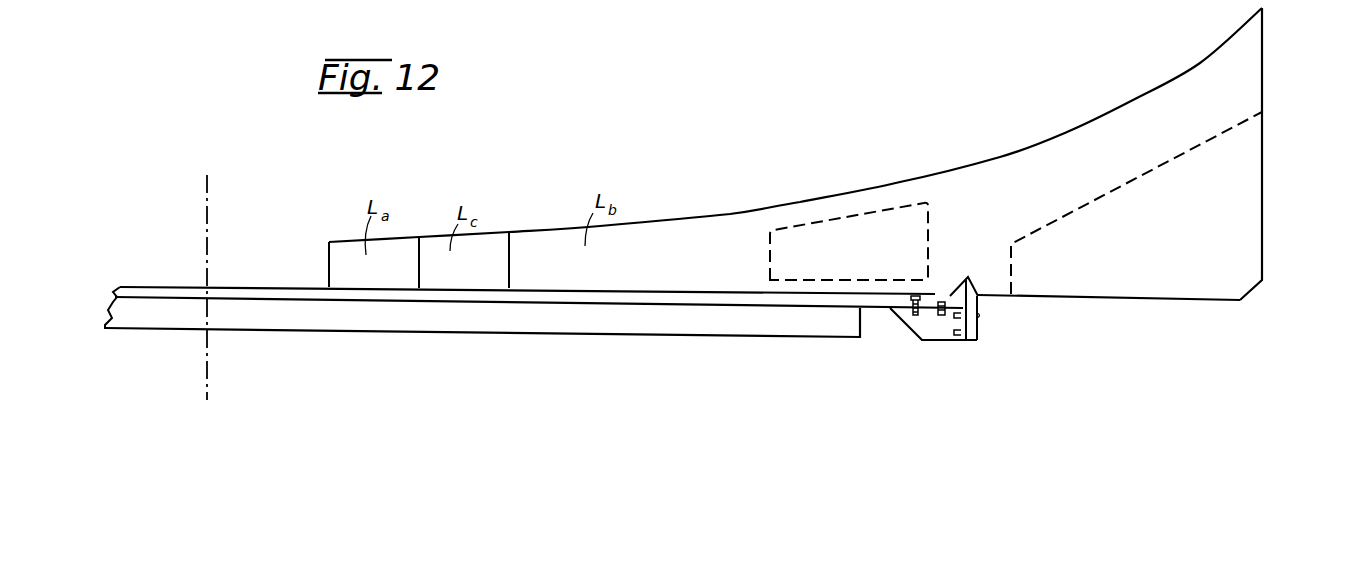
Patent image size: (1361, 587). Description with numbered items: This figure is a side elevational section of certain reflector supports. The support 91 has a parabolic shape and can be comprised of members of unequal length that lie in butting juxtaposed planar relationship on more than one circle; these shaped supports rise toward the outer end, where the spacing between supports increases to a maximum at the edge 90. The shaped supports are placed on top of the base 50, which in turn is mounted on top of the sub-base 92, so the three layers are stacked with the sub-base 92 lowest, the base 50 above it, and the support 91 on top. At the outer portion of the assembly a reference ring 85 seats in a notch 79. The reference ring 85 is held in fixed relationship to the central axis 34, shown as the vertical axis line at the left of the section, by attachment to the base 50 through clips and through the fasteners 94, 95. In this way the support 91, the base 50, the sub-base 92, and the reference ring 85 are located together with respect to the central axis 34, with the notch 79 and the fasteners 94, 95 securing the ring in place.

The central axis 34 is at (206, 398).
The base 50 is at (622, 300).
The notch 79 is at (965, 281).
The reference ring 85 is at (976, 300).
The edge 90 is at (1263, 58).
The support 91 is at (1050, 155).
The sub-base 92 is at (700, 323).
The fastener 94 is at (916, 297).
The fastener 95 is at (978, 336).